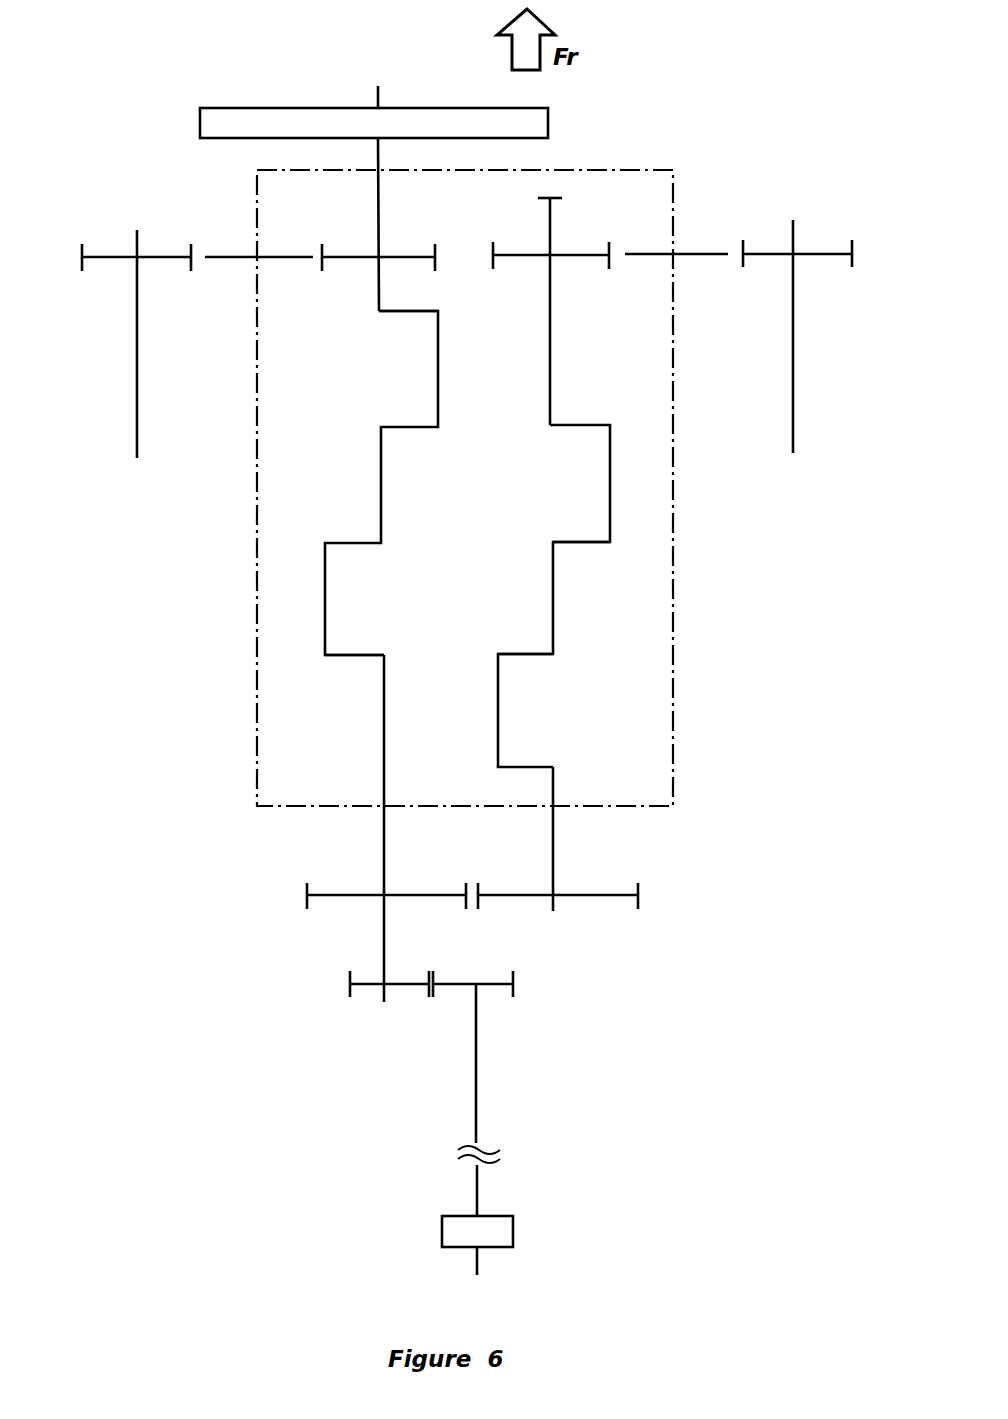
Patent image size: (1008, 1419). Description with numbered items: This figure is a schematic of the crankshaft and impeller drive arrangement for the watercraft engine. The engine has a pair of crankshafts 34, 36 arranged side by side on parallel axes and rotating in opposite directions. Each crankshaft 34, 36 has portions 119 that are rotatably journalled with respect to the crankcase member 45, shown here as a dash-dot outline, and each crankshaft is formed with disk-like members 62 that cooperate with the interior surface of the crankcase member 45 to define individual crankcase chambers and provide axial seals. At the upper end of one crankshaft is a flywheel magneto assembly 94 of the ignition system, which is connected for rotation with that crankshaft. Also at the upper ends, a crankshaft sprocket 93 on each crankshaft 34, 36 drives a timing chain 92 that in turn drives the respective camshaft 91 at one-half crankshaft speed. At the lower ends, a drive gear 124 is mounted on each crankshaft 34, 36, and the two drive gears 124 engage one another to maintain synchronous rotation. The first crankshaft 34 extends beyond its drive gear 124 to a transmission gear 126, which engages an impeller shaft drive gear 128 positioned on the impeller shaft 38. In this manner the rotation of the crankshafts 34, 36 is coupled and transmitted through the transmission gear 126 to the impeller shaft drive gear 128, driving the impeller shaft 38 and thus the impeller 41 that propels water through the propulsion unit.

The first crankshaft 34 is at (307, 508).
The second crankshaft 36 is at (588, 570).
The impeller shaft 38 is at (475, 1028).
The impeller 41 is at (442, 1228).
The crankcase member 45 is at (673, 488).
The disk-like members 62 is at (412, 312).
The camshaft 91 is at (137, 343).
The timing chain 92 is at (220, 257).
The crankshaft sprocket 93 is at (102, 257).
The flywheel magneto assembly 94 is at (446, 107).
The crankshaft journal portions 119 is at (378, 275).
The drive gear 124 is at (340, 896).
The transmission gear 126 is at (365, 984).
The impeller shaft drive gear 128 is at (492, 986).